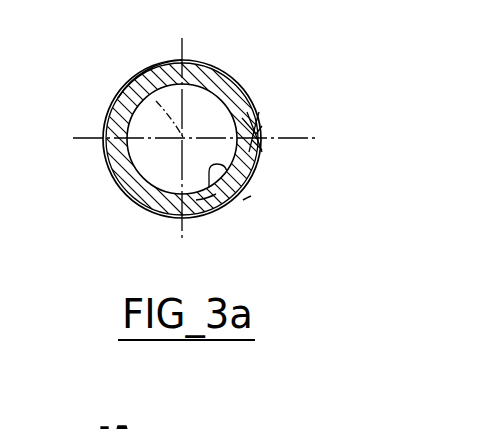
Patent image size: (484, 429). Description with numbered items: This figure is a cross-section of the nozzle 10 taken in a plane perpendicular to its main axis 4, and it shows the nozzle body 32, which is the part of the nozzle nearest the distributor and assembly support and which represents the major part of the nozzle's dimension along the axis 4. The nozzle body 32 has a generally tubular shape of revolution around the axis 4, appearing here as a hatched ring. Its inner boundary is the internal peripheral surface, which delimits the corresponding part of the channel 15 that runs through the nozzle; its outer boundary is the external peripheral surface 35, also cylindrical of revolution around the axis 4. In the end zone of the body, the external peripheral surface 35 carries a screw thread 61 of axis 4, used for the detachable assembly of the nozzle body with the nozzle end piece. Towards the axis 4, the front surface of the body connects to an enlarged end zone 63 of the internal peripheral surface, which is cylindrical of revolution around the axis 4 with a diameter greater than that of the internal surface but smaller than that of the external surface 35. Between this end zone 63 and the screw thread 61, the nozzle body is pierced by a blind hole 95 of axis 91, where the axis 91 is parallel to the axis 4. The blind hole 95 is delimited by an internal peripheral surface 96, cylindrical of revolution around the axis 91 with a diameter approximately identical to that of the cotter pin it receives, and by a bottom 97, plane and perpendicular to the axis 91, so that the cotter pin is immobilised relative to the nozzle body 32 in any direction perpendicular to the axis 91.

The nozzle 10 is at (129, 209).
The nozzle body 32 is at (118, 100).
The axis 4 is at (151, 71).
The channel 15 is at (142, 157).
The bottom 97 is at (238, 134).
The internal peripheral surface 96 is at (250, 134).
The blind hole 95 is at (263, 137).
The axis 91 is at (296, 137).
The external peripheral surface 35 is at (255, 163).
The end zone 63 is at (213, 212).
The screw thread 61 is at (247, 196).